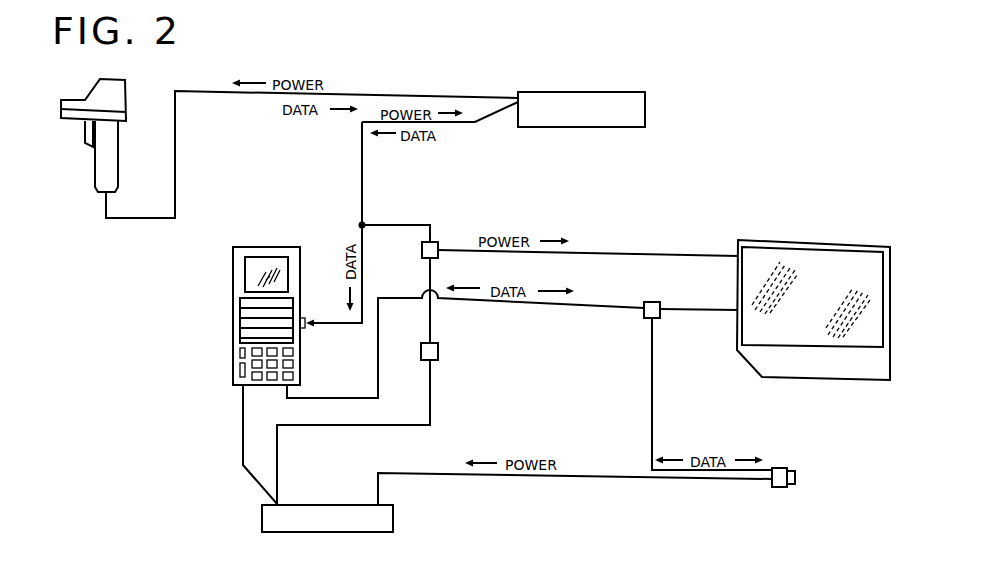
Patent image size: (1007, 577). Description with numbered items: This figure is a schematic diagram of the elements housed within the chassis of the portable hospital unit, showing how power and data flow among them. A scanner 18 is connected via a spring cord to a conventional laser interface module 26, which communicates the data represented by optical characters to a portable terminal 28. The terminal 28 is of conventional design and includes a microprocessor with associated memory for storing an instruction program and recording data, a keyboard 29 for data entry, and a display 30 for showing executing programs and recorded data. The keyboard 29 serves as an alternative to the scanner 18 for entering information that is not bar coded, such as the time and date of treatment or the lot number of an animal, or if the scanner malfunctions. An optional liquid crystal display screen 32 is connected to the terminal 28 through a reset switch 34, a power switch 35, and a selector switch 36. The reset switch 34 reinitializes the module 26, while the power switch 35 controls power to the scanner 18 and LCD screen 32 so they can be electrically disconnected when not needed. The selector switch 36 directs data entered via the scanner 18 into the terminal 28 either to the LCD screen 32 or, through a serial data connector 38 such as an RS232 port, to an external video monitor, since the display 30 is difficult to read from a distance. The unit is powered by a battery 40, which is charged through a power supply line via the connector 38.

The scanner 18 is at (80, 176).
The laser interface module 26 is at (552, 127).
The portable terminal 28 is at (229, 299).
The keyboard 29 is at (238, 360).
The display 30 is at (267, 262).
The liquid crystal display screen 32 is at (817, 242).
The reset switch 34 is at (438, 349).
The power switch 35 is at (438, 242).
The selector switch 36 is at (648, 302).
The serial data connector 38 is at (780, 468).
The battery 40 is at (328, 505).